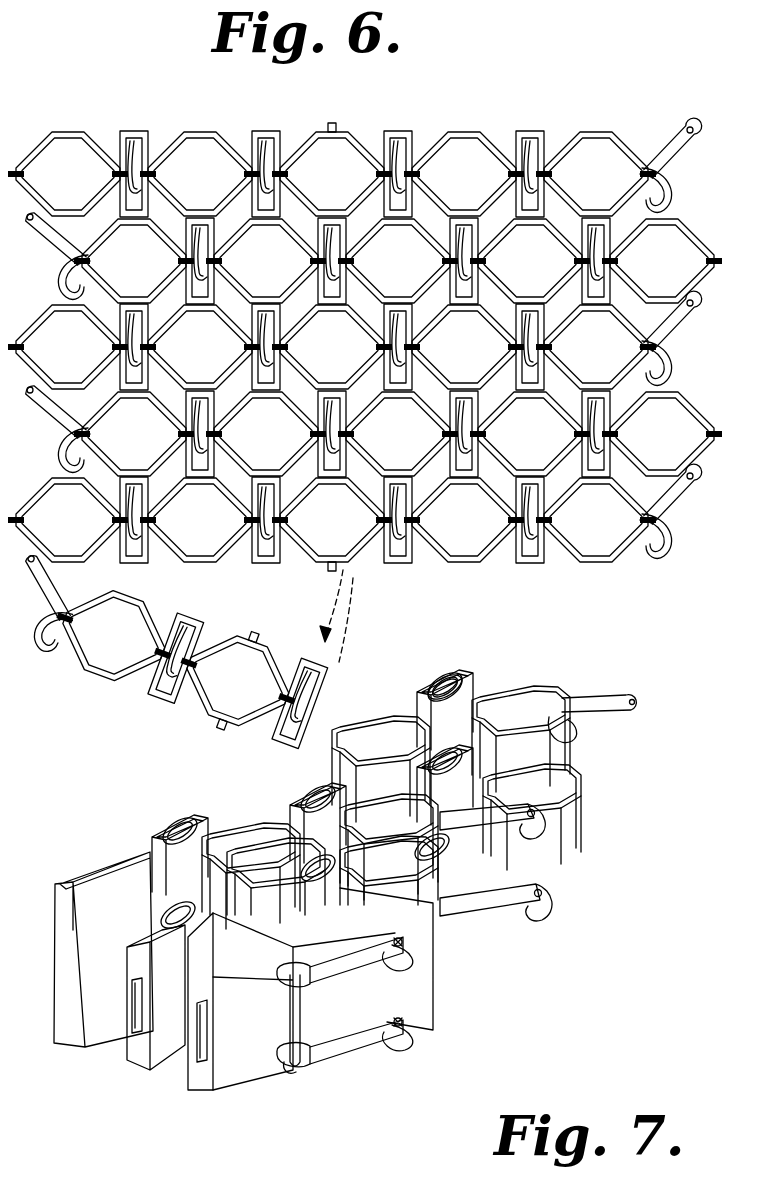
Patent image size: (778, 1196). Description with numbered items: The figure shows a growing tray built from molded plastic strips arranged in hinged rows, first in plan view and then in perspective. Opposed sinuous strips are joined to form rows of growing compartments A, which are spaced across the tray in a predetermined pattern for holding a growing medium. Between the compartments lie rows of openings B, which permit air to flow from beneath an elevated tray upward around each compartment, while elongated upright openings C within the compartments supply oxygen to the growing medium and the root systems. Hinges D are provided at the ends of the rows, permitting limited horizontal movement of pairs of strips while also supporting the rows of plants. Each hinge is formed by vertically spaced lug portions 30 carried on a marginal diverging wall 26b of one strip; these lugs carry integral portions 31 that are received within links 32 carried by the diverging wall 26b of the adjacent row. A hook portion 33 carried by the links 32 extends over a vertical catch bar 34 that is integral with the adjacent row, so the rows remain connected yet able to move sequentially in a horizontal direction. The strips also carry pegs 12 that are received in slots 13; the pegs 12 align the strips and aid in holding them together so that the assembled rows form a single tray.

In FIG. 6, the growing compartments A is at (456, 546).
In FIG. 7, the growing compartments A is at (514, 708).
In FIG. 6, the openings B is at (397, 562).
In FIG. 7, the openings B is at (466, 683).
In FIG. 6, the elongated upright openings C is at (414, 512).
In FIG. 7, the elongated upright openings C is at (424, 705).
In FIG. 6, the hinges D is at (700, 292).
In FIG. 7, the hinges D is at (562, 896).
In FIG. 6, the pegs 12 is at (259, 632).
In FIG. 7, the pegs 12 is at (198, 1068).
In FIG. 6, the slots 13 is at (266, 564).
In FIG. 7, the slots 13 is at (132, 1010).
In FIG. 7, the marginal diverging wall 26b is at (290, 943).
In FIG. 7, the vertical spaced lug portions 30 is at (432, 964).
In FIG. 7, the integral portions 31 is at (397, 938).
In FIG. 7, the links 32 is at (350, 966).
In FIG. 7, the hook portion 33 is at (312, 1068).
In FIG. 7, the vertical catch bar 34 is at (290, 1012).